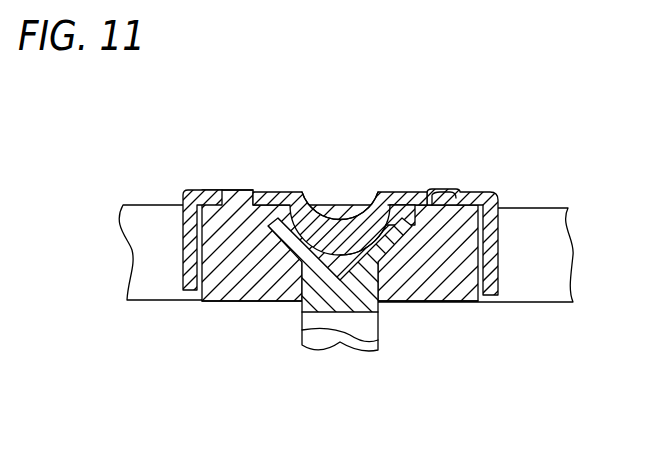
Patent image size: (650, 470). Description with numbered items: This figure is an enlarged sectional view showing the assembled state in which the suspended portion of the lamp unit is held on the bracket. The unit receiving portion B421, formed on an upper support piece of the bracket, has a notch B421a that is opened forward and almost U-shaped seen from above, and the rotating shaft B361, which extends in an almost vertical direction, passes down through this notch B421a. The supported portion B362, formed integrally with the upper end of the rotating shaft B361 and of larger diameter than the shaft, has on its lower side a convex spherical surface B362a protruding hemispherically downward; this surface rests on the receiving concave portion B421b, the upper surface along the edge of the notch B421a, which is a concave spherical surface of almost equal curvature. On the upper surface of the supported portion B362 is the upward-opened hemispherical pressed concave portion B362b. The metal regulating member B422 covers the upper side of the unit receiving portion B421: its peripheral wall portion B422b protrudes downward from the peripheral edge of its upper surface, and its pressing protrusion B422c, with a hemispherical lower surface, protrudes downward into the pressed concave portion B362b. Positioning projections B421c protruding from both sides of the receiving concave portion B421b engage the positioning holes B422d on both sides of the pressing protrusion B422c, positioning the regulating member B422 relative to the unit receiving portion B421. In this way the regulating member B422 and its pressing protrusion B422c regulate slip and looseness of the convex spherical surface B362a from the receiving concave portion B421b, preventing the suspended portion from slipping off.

The unit receiving portion B421 is at (457, 293).
The notch B421a is at (350, 300).
The receiving concave portion B421b is at (247, 302).
The positioning projection B421c is at (238, 190).
The regulating member B422 is at (315, 262).
The peripheral wall portion B422b is at (187, 258).
The pressing protrusion B422c is at (302, 323).
The positioning hole B422d is at (443, 190).
The supported portion B362 is at (413, 222).
The convex spherical surface B362a is at (422, 303).
The pressed concave portion B362b is at (327, 202).
The rotating shaft B361 is at (328, 330).